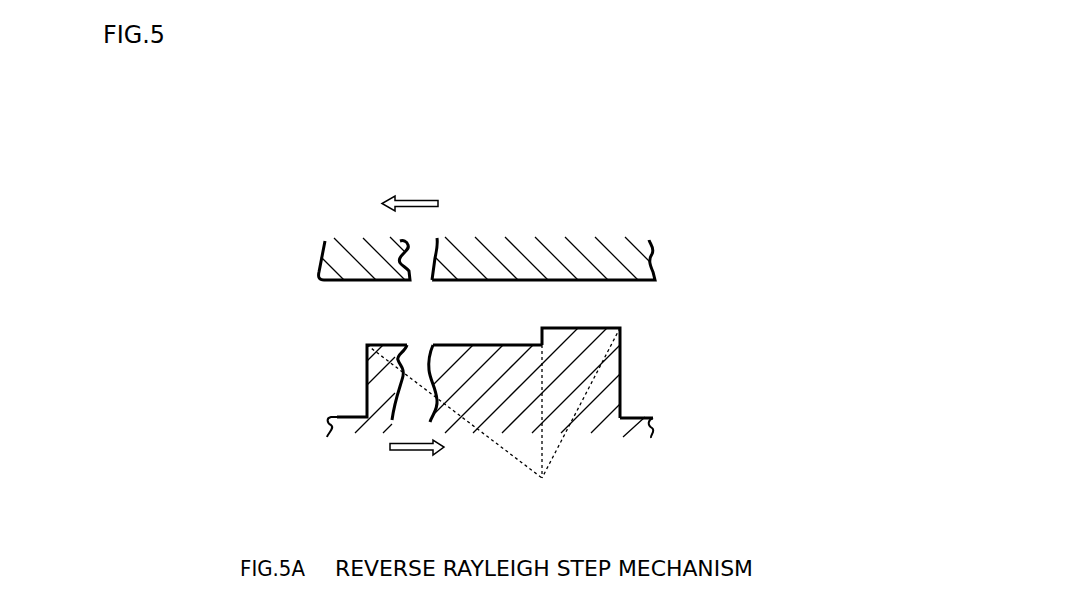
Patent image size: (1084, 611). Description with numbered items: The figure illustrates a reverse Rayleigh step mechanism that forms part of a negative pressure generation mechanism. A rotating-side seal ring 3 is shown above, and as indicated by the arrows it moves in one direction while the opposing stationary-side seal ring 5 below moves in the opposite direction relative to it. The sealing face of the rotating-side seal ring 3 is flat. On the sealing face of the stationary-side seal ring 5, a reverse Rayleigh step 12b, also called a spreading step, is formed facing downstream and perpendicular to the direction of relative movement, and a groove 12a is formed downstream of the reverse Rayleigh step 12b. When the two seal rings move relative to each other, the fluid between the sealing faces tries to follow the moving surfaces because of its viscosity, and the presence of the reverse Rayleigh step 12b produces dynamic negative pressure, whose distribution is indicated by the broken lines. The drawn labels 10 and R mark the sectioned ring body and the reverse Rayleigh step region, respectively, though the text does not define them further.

The rotating-side seal ring 3 is at (587, 241).
The seal ring (sliding component) 10 is at (330, 417).
The groove 12a is at (447, 344).
The reverse Rayleigh step 12b is at (542, 328).
The reverse Rayleigh step R is at (593, 328).
The stationary-side seal ring 5 is at (497, 430).